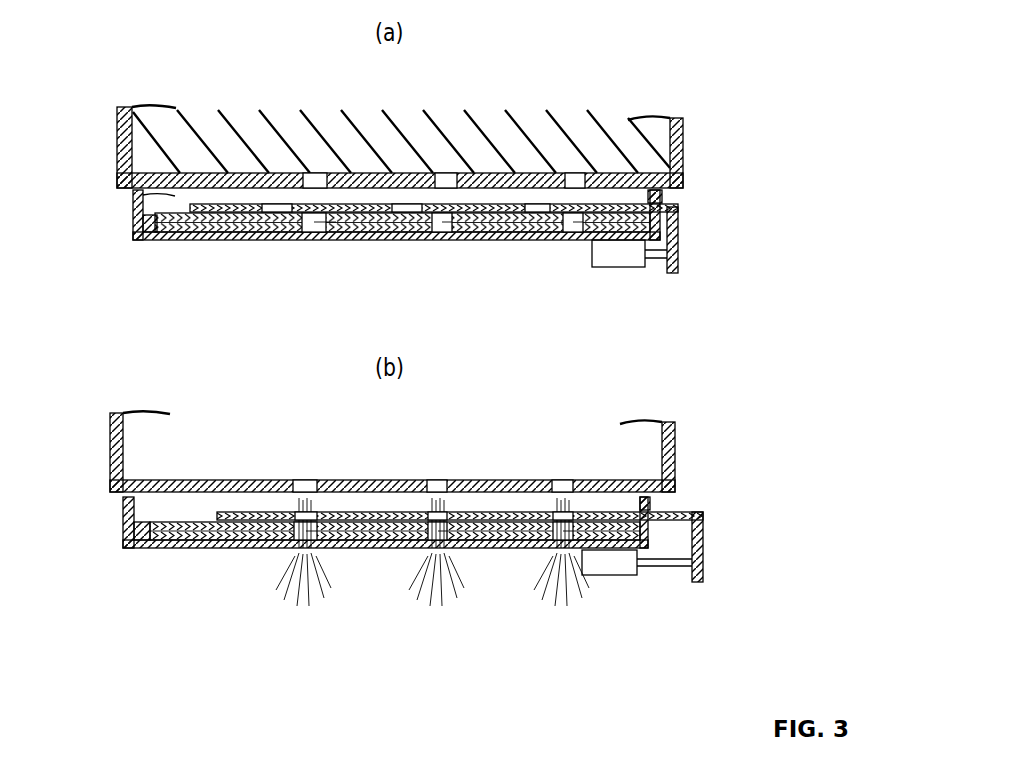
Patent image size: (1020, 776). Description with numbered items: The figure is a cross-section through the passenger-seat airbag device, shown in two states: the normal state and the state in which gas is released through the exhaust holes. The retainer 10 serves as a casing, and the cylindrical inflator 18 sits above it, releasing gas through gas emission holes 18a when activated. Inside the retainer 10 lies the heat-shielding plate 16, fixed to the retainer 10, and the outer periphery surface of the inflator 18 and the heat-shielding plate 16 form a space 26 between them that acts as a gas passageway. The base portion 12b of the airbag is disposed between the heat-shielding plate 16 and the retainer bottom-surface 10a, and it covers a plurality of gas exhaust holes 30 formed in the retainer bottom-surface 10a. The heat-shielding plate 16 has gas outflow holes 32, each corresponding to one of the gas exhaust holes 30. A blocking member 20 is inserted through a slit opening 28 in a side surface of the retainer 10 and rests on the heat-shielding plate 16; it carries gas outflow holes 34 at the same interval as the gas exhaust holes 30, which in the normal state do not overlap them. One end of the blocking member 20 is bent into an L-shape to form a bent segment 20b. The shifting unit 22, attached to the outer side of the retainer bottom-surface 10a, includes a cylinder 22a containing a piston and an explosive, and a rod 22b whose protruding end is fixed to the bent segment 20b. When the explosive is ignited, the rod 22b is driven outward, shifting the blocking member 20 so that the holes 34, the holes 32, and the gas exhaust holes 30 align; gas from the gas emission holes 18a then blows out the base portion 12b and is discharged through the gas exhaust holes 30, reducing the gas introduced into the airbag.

The retainer 10 is at (349, 405).
The retainer bottom-surface 10a is at (175, 242).
The base portion 12b is at (248, 233).
The heat-shielding plate 16 is at (133, 218).
The inflator 18 is at (675, 428).
The gas emission holes 18a is at (313, 173).
The blocking member 20 is at (543, 348).
The bent segment 20b is at (678, 238).
The shifting unit 22 is at (689, 442).
The cylinder 22a is at (610, 267).
The rod 22b is at (655, 262).
The space (gas passageway) 26 is at (172, 195).
The slit opening 28 is at (662, 197).
The gas exhaust holes 30 is at (310, 240).
The gas outflow holes 32 is at (450, 214).
The gas outflow holes 34 is at (274, 204).